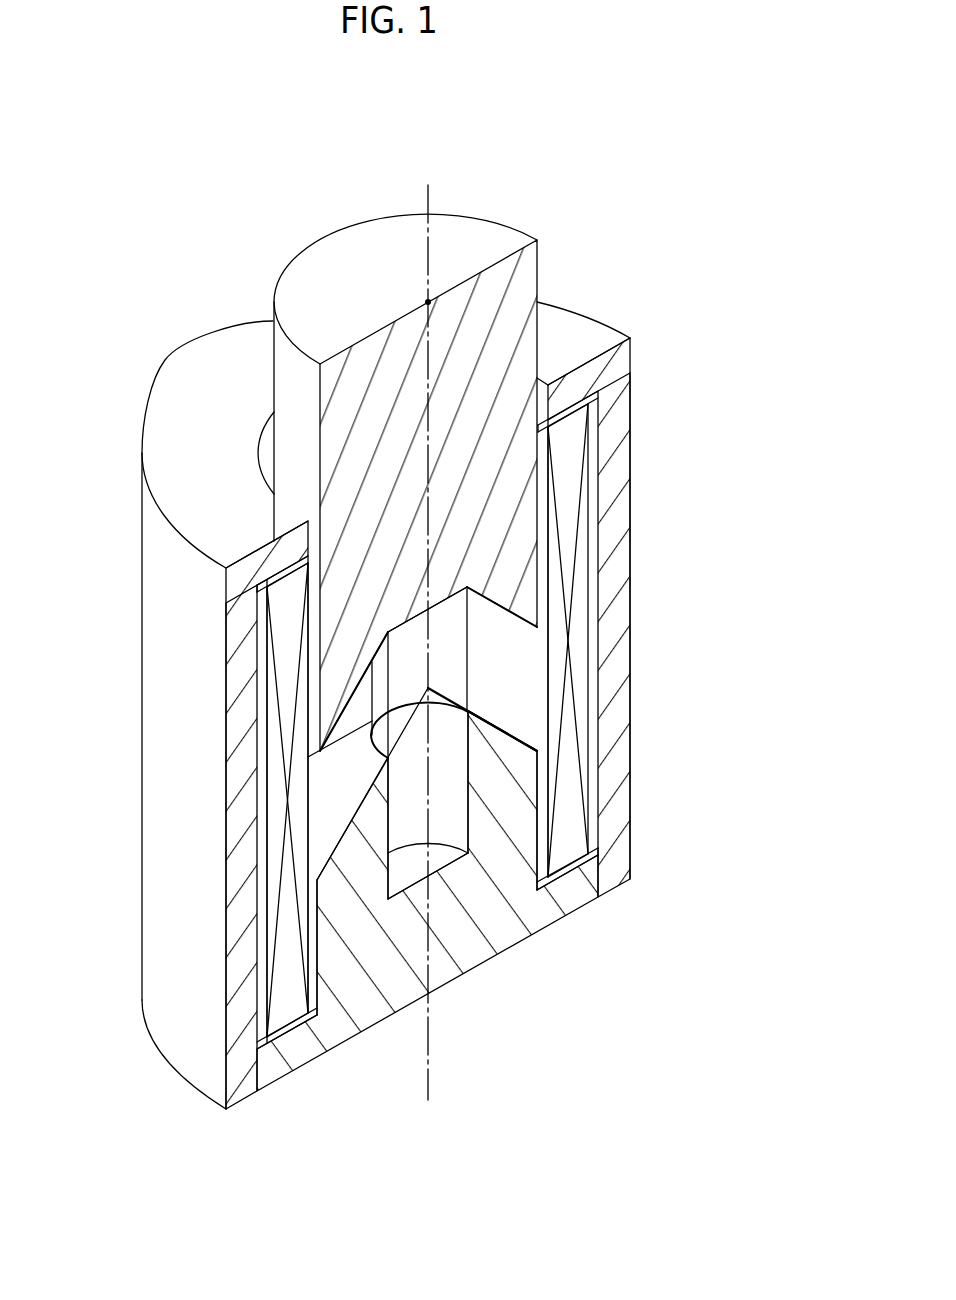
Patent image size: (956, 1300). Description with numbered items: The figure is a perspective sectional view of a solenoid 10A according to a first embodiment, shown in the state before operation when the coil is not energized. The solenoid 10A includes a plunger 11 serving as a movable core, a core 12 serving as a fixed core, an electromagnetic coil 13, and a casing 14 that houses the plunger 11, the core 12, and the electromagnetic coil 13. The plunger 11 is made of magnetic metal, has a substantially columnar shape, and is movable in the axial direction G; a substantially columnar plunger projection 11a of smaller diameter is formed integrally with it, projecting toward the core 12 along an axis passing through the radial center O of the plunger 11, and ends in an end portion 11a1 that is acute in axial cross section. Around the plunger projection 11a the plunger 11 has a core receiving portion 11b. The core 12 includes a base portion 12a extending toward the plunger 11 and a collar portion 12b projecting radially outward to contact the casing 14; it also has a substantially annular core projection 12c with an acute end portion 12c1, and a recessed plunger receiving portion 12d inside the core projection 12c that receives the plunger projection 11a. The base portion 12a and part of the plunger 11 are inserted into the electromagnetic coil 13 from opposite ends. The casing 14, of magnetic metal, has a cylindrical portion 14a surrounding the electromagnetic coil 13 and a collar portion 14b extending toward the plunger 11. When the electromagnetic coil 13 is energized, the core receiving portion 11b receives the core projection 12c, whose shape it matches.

The solenoid 10A is at (636, 114).
The plunger 11 is at (309, 233).
The plunger projection 11a is at (451, 633).
The end portion 11a1 is at (464, 695).
The core receiving portion 11b is at (353, 718).
The core 12 is at (540, 931).
The base portion 12a is at (368, 944).
The collar portion 12b is at (288, 1063).
The core projection 12c is at (507, 793).
The end portion 12c1 is at (478, 731).
The plunger receiving portion 12d is at (453, 828).
The electromagnetic coil 13 is at (598, 658).
The casing 14 is at (636, 384).
The cylindrical portion 14a is at (618, 451).
The collar portion 14b is at (576, 374).
The axial direction G is at (433, 214).
The radial center O is at (428, 302).